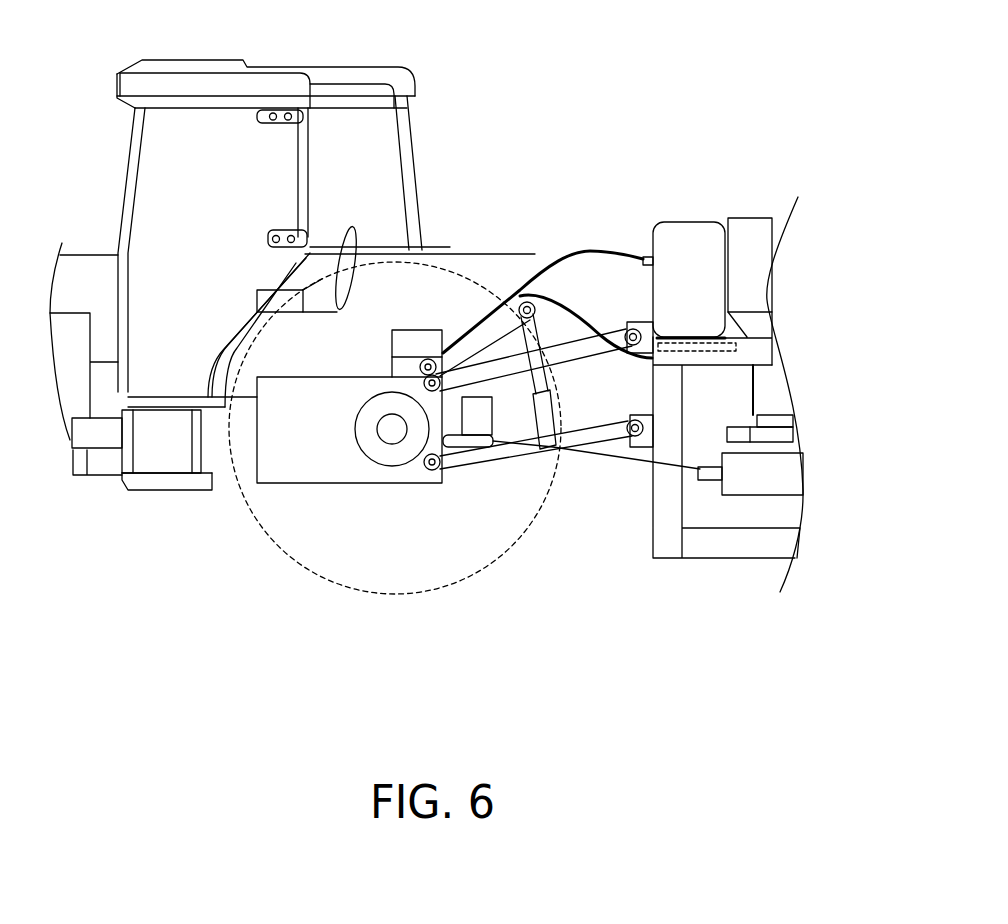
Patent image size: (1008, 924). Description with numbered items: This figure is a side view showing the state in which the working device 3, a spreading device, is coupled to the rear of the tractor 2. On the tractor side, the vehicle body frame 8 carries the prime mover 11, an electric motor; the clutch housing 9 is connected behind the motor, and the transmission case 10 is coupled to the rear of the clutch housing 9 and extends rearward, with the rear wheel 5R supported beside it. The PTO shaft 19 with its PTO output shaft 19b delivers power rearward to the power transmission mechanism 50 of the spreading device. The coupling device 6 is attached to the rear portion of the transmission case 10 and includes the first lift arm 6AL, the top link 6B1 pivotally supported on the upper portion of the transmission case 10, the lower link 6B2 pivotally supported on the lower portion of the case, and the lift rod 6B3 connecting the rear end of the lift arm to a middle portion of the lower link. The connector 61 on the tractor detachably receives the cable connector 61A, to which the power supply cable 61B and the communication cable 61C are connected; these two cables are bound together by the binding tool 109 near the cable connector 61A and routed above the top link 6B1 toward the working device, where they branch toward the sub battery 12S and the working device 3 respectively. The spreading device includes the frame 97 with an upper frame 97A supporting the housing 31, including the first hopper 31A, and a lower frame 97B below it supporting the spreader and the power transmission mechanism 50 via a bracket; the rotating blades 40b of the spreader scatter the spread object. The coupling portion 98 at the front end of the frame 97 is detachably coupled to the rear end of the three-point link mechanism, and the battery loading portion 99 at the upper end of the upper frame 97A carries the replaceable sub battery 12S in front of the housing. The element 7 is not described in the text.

The tractor 2 is at (413, 73).
The operator seat lever 7 is at (350, 228).
The prime mover 11 is at (82, 313).
The vehicle body frame 8 is at (73, 468).
The clutch housing 9 is at (103, 473).
The rear wheel 5R is at (257, 530).
The transmission case 10 is at (290, 483).
The PTO shaft 19 is at (383, 468).
The PTO output shaft 19b is at (467, 447).
The coupling device 6 is at (512, 463).
The top link 6B1 is at (613, 338).
The lower link 6B2 is at (488, 447).
The lift rod 6B3 is at (547, 368).
The first lift arm 6AL is at (505, 320).
The connector 61 is at (445, 357).
The cable connector 61A is at (534, 355).
The power supply cable 61B is at (598, 251).
The communication cable 61C is at (606, 352).
The binding tool 109 is at (494, 308).
The sub battery 12S is at (690, 221).
The housing 31 is at (745, 200).
The first hopper 31A is at (748, 291).
The working device 3 is at (806, 183).
The frame 97 is at (710, 562).
The upper frame 97A is at (732, 368).
The lower frame 97B is at (647, 545).
The coupling portion 98 is at (634, 328).
The battery loading portion 99 is at (695, 350).
The rotating blade 40b is at (793, 437).
The power transmission mechanism 50 is at (783, 495).